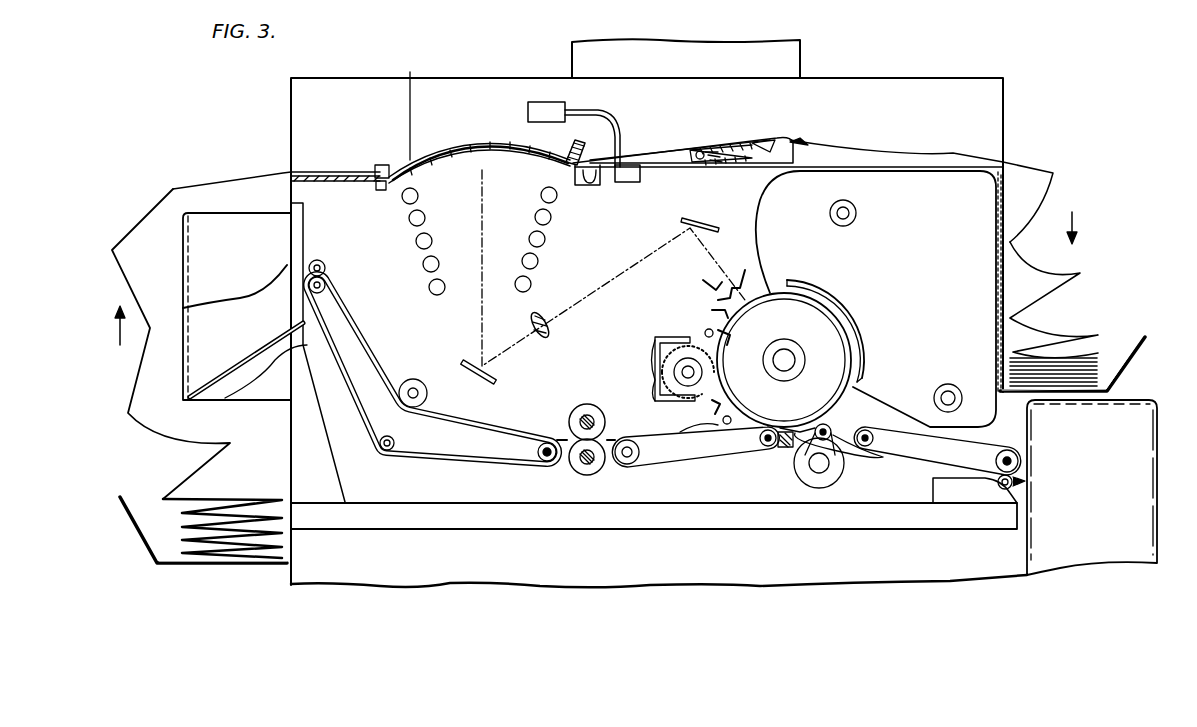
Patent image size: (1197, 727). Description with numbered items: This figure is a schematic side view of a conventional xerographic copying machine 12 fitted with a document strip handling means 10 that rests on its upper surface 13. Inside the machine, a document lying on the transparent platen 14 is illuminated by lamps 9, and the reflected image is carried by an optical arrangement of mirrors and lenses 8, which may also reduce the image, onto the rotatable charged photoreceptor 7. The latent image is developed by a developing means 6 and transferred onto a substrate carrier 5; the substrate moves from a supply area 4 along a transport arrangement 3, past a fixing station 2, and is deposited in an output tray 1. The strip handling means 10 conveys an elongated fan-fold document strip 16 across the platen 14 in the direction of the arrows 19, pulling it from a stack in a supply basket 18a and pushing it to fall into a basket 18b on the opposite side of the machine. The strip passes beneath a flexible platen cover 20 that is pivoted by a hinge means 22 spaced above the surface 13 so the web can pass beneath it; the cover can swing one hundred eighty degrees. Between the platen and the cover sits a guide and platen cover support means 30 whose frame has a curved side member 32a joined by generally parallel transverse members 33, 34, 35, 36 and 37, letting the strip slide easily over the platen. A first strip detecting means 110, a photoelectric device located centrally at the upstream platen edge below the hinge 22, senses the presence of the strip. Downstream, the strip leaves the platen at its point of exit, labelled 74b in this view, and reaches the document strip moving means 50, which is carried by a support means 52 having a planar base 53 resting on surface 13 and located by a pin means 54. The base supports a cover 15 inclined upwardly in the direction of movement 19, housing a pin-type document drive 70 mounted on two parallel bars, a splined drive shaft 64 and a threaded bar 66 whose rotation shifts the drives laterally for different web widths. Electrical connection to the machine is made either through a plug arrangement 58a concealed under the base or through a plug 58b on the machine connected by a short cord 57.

The output tray 1 is at (242, 307).
The fixing station 2 is at (572, 418).
The transport arrangement 3 is at (630, 467).
The supply area 4 is at (1138, 450).
The substrate carrier 5 is at (705, 425).
The developing means 6 is at (860, 340).
The photoreceptor 7 is at (822, 313).
The optical arrangement of mirrors and lenses 8 is at (468, 362).
The lamps 9 is at (403, 226).
The document strip handling means 10 is at (842, 100).
The copying machine 12 is at (1005, 183).
The upper surface 13 is at (880, 172).
The transparent platen 14 is at (422, 170).
The cover 15 is at (644, 163).
The elongated document strip 16 is at (215, 185).
The supply basket 18a is at (150, 542).
The basket 18b is at (1135, 355).
The arrows 19 is at (593, 275).
The platen cover 20 is at (408, 104).
The hinge means 22 is at (375, 172).
The guide and platen cover support means 30 is at (398, 148).
The curved side member 32a is at (490, 140).
The transverse member 33 is at (392, 165).
The transverse member 34 is at (418, 158).
The transverse member 35 is at (475, 147).
The transverse member 36 is at (520, 148).
The transverse member 37 is at (548, 165).
The document strip moving means 50 is at (795, 142).
The support means 52 is at (684, 178).
The base 53 is at (690, 160).
The pin means 54 is at (628, 183).
The short cord 57 is at (575, 108).
The electrical plug arrangement 58a is at (626, 165).
The electrical plug 58b is at (548, 102).
The splined drive shaft 64 is at (768, 140).
The threaded bar 66 is at (707, 150).
The document drive 70 is at (737, 148).
The sensor block 74b is at (580, 185).
The first strip sensing means 110 is at (380, 190).